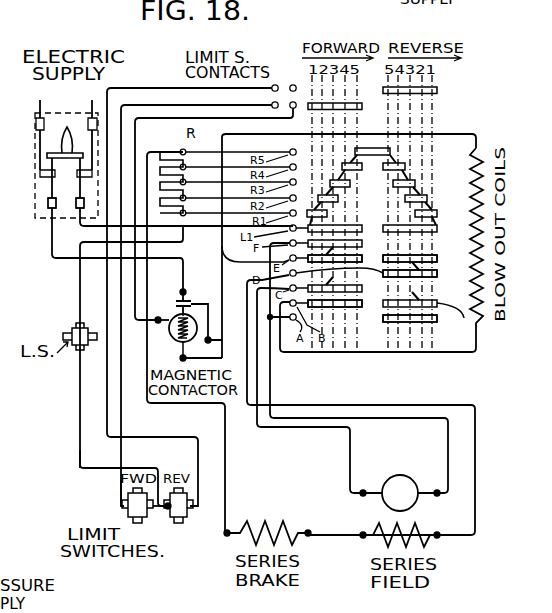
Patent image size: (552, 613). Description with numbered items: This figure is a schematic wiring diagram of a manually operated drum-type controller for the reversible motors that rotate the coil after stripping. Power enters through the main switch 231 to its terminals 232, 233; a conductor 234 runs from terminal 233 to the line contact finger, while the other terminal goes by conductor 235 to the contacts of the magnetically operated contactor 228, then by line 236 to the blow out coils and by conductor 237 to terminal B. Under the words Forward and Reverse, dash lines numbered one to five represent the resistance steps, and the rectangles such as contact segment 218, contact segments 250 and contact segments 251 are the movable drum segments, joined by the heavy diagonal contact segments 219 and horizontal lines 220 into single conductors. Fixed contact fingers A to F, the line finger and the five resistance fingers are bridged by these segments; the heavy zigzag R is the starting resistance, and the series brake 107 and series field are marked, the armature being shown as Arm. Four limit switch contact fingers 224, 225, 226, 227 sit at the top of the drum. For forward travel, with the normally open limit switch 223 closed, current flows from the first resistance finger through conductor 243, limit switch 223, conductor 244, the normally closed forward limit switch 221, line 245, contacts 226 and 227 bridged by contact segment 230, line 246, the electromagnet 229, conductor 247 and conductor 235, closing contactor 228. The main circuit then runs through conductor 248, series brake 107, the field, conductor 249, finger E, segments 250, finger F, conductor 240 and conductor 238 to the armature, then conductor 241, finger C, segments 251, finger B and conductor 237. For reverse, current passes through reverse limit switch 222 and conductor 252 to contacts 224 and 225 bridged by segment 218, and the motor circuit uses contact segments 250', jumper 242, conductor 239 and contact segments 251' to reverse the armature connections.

The main switch 231 is at (67, 127).
The terminal 232 is at (48, 200).
The terminal 233 is at (77, 203).
The conductor 234 is at (78, 224).
The conductor 235 is at (50, 257).
The conductor 243 is at (78, 290).
The limit switch 223 is at (72, 331).
The conductor 252 is at (126, 88).
The line 246 is at (176, 105).
The limit switch contact finger 224 is at (275, 85).
The limit switch contact finger 226 is at (272, 105).
The limit switch contact finger 227 is at (272, 114).
The limit switch contact finger 225 is at (293, 84).
The conductor 248 is at (170, 137).
The conductor 240 is at (221, 250).
The line 236 is at (221, 267).
The magnetically operated contactor 228 is at (175, 302).
The conductor 247 is at (214, 303).
The electromagnet 229 is at (173, 337).
The contact segment 218 is at (437, 90).
The contact segment 230 is at (362, 107).
The contact segments 219 is at (428, 194).
The contact segments 250 is at (347, 230).
The contact segments 250' is at (426, 248).
The jumper 242 is at (342, 271).
The contact segments 251 is at (427, 284).
The contact segments 251' is at (423, 326).
The horizontal lines 220 is at (362, 307).
The conductor 237 is at (470, 355).
The conductor 239 is at (283, 355).
The conductor 238 is at (412, 405).
The conductor 249 is at (476, 460).
The conductor 241 is at (352, 460).
The series brake 107 is at (283, 508).
The conductor 244 is at (78, 459).
The line 245 is at (119, 493).
The forward limit switch 221 is at (125, 508).
The reverse limit switch 222 is at (178, 523).